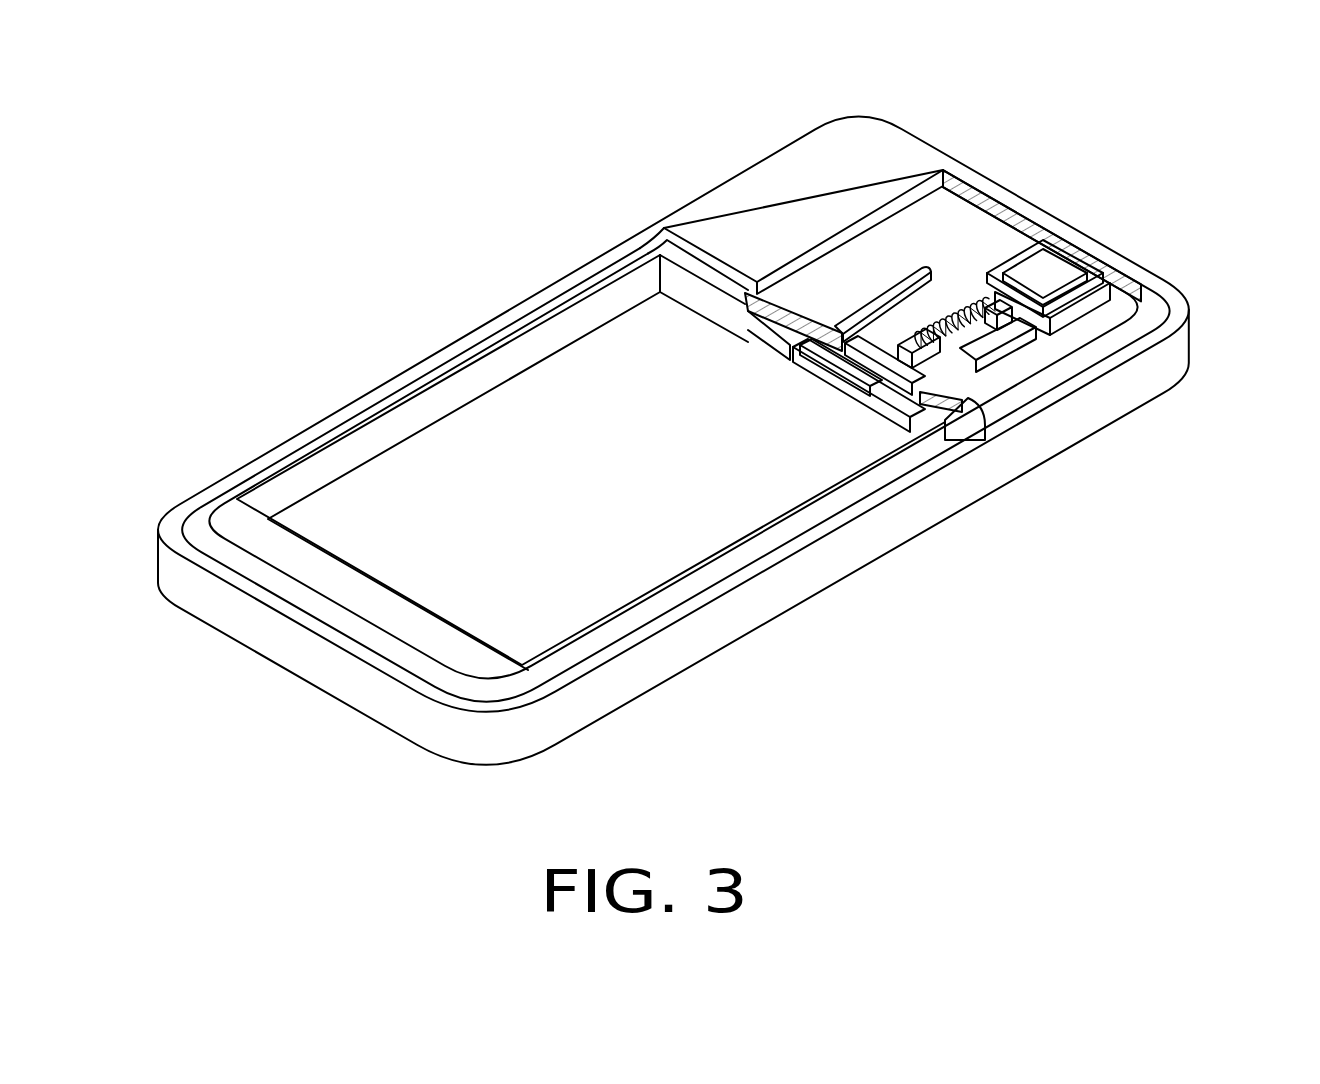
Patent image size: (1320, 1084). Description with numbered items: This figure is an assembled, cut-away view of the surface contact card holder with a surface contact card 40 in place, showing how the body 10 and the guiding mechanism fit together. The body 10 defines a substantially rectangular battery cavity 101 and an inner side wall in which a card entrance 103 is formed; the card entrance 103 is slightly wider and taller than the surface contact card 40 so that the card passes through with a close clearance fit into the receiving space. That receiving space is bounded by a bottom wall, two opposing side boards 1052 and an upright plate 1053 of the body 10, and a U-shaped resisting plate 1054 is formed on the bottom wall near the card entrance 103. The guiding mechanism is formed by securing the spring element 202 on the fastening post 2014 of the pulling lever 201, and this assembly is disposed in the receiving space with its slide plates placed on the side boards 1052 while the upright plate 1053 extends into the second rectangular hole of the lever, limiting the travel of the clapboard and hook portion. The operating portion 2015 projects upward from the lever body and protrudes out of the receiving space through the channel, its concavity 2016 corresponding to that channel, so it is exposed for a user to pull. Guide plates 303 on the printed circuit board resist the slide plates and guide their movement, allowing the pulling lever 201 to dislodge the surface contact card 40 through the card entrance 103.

The body 10 is at (768, 185).
The battery cavity 101 is at (463, 443).
The card entrance 103 is at (792, 372).
The side boards 1052 is at (905, 285).
The spring element 202 is at (1007, 242).
The upright plate 1053 is at (1045, 300).
The fastening post 2014 is at (1000, 345).
The pulling lever 201 is at (985, 358).
The U-shaped resisting plate 1054 is at (975, 395).
The guide plates 303 is at (952, 395).
The concavity 2016 is at (880, 360).
The operating portion 2015 is at (852, 375).
The surface contact card 40 is at (813, 375).